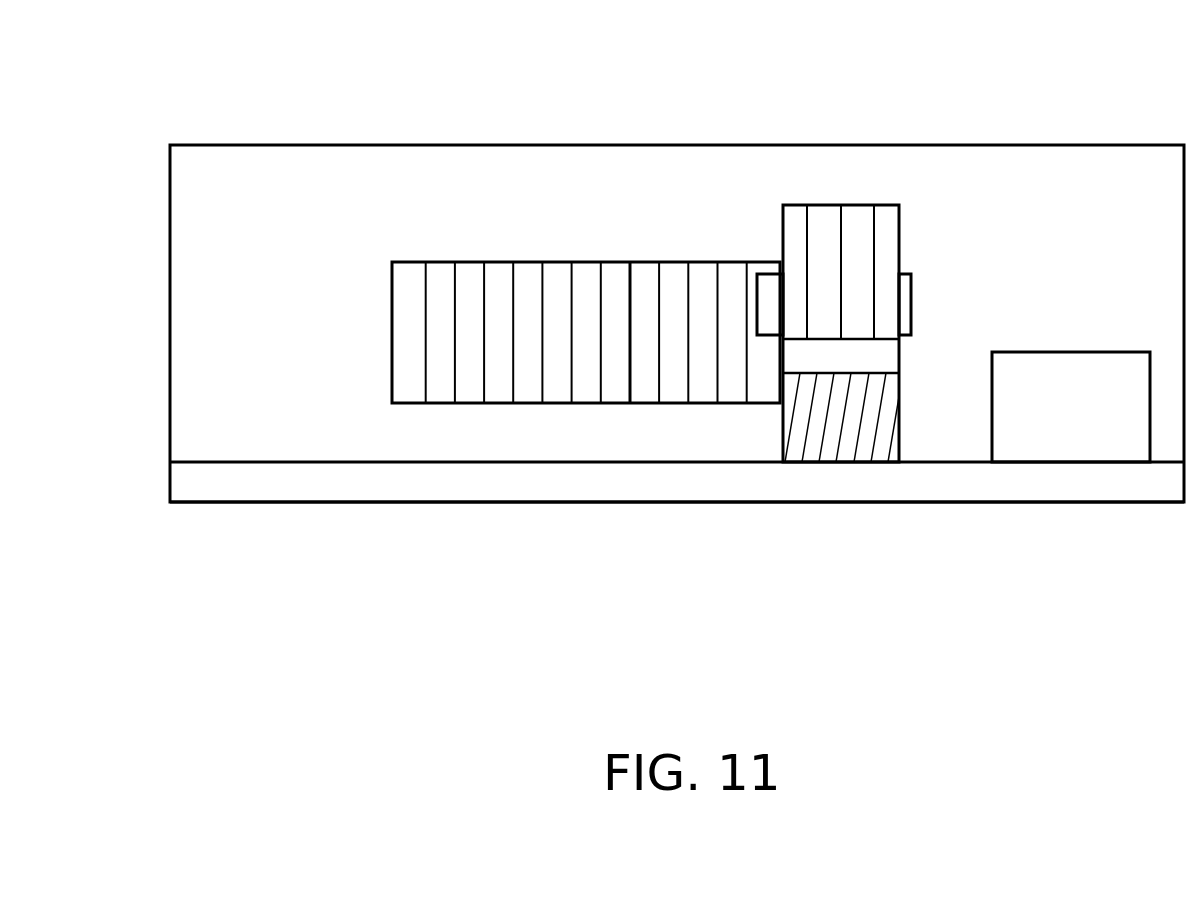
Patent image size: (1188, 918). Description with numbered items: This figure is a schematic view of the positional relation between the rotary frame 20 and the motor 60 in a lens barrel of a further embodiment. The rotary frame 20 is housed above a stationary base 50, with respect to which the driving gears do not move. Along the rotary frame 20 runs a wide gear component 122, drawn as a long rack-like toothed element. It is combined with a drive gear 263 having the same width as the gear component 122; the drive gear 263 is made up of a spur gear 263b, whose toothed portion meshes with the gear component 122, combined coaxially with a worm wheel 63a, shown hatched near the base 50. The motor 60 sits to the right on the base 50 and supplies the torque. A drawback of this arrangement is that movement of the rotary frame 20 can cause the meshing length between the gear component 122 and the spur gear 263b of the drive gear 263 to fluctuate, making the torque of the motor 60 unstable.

The rotary frame 20 is at (325, 125).
The base 50 is at (345, 489).
The gear component 122 is at (584, 292).
The drive gear 263 is at (849, 324).
The spur gear 263b is at (858, 228).
The worm wheel 63a is at (852, 432).
The motor 60 is at (1043, 428).